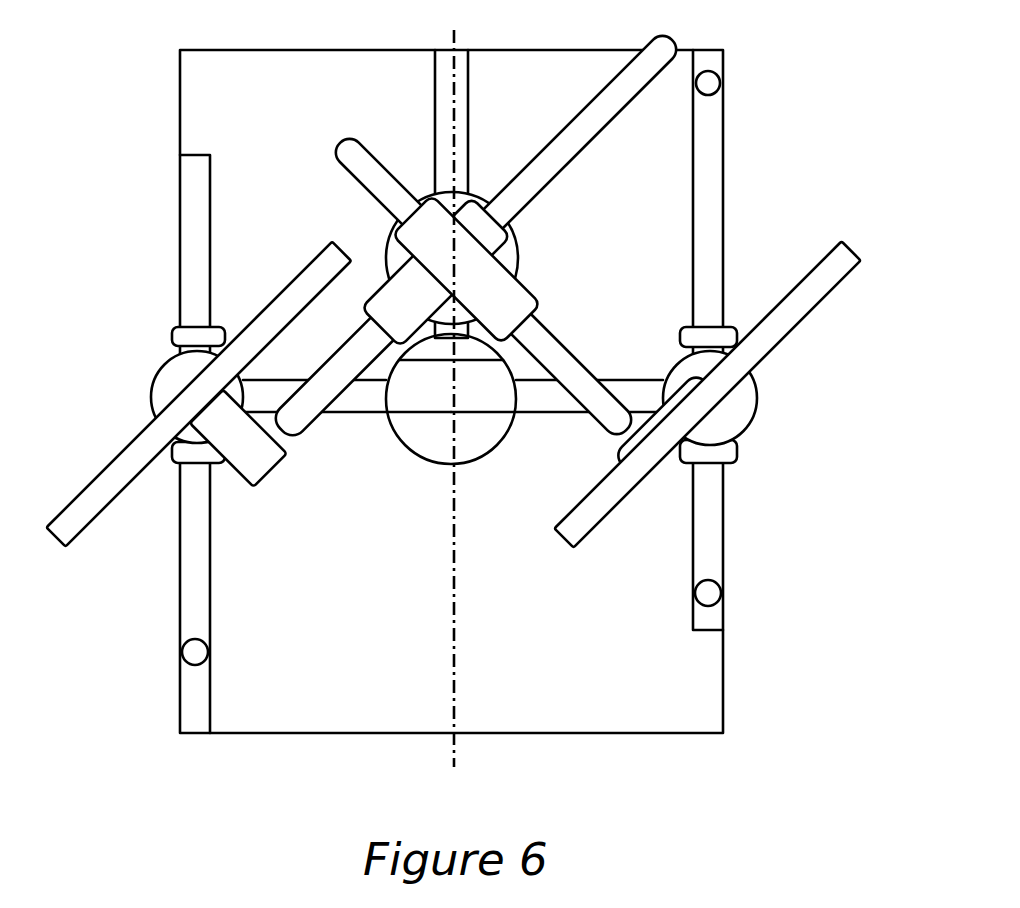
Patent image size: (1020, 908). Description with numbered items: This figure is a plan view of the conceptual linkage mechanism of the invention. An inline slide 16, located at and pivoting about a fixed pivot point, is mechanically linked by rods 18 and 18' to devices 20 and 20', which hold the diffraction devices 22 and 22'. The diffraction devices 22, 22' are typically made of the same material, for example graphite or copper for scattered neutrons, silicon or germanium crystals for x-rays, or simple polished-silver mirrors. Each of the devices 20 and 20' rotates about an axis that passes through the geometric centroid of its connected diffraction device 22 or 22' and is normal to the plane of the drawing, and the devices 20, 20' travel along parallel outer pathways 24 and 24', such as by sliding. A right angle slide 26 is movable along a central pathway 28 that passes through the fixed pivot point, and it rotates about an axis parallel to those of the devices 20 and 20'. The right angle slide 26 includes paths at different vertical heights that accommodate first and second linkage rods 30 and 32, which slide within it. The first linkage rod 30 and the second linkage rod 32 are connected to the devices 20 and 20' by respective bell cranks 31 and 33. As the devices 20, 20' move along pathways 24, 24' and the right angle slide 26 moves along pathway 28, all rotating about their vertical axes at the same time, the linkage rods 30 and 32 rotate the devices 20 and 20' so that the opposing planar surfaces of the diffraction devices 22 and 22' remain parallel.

The inline slide 16 is at (418, 458).
The rod 18 is at (557, 424).
The rod 18' is at (347, 428).
The device 20 is at (741, 395).
The device 20' is at (161, 395).
The diffraction device 22 is at (722, 394).
The diffraction device 22' is at (198, 414).
The outer pathway 24 is at (738, 340).
The outer pathway 24' is at (162, 444).
The right angle slide 26 is at (470, 195).
The central pathway 28 is at (470, 62).
The first linkage rod 30 is at (576, 368).
The bell crank 31 is at (657, 483).
The second linkage rod 32 is at (291, 443).
The bell crank 33 is at (256, 488).